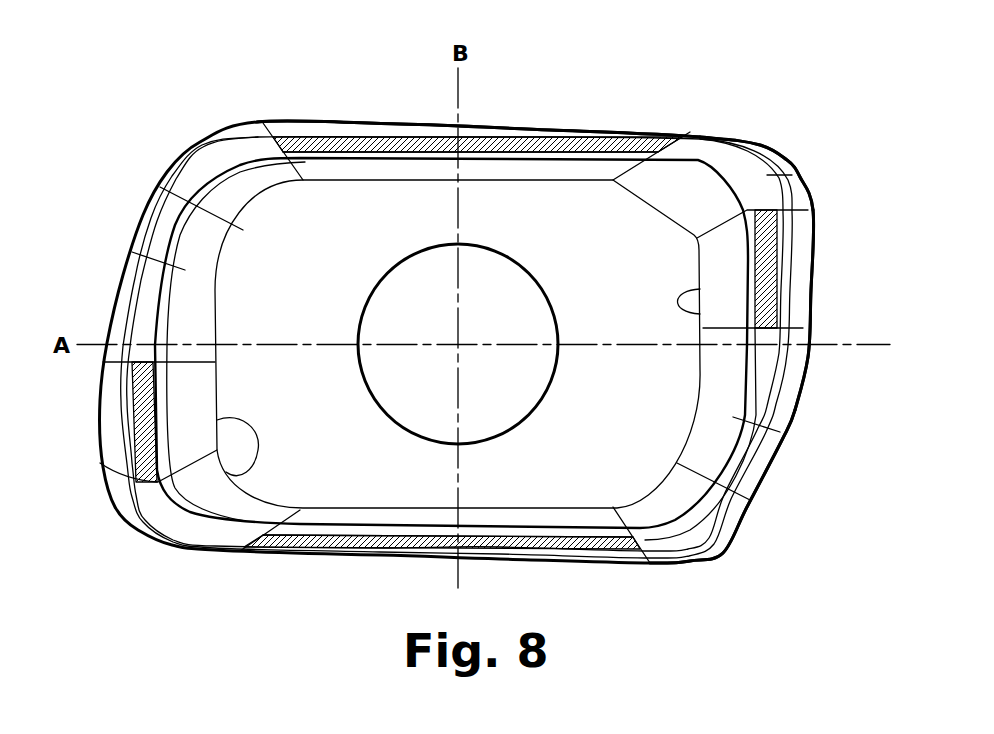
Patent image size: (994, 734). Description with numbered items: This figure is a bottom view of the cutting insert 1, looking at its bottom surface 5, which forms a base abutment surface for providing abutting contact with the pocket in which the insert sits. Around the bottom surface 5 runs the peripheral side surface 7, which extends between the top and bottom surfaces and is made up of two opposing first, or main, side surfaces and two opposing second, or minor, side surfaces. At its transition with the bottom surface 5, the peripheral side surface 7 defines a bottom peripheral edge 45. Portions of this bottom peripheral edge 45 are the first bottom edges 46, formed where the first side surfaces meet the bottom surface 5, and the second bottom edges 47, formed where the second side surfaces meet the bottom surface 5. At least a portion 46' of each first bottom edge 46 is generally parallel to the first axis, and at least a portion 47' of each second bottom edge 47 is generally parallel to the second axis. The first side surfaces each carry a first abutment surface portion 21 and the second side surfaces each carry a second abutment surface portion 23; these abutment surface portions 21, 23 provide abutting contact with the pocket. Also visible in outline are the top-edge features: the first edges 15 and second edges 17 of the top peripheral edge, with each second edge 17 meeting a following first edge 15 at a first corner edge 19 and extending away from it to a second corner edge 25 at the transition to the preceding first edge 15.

The cutting insert 1 is at (168, 67).
The bottom surface 5 is at (607, 258).
The peripheral side surface 7 is at (100, 270).
The first edge 15 is at (355, 125).
The second edge 17 is at (810, 358).
The first corner edge 19 is at (725, 545).
The first abutment surface portion 21 is at (600, 137).
The second abutment surface portion 23 is at (768, 268).
The second corner edge 25 is at (772, 152).
The bottom peripheral edge 45 is at (358, 192).
The first bottom edge 46 is at (451, 343).
The portion of first bottom edge 46' is at (460, 346).
The second bottom edge 47 is at (397, 338).
The portion of second bottom edge 47' is at (495, 453).